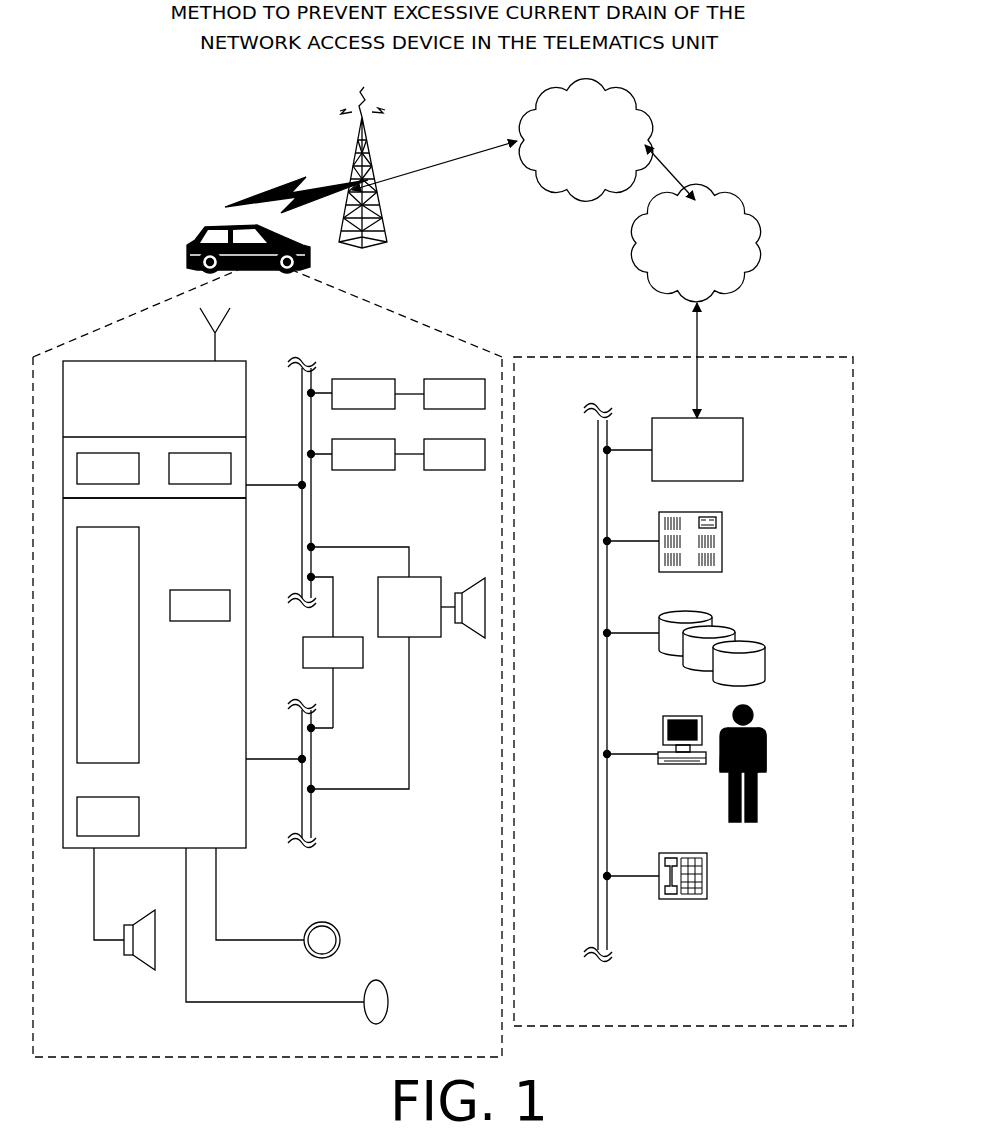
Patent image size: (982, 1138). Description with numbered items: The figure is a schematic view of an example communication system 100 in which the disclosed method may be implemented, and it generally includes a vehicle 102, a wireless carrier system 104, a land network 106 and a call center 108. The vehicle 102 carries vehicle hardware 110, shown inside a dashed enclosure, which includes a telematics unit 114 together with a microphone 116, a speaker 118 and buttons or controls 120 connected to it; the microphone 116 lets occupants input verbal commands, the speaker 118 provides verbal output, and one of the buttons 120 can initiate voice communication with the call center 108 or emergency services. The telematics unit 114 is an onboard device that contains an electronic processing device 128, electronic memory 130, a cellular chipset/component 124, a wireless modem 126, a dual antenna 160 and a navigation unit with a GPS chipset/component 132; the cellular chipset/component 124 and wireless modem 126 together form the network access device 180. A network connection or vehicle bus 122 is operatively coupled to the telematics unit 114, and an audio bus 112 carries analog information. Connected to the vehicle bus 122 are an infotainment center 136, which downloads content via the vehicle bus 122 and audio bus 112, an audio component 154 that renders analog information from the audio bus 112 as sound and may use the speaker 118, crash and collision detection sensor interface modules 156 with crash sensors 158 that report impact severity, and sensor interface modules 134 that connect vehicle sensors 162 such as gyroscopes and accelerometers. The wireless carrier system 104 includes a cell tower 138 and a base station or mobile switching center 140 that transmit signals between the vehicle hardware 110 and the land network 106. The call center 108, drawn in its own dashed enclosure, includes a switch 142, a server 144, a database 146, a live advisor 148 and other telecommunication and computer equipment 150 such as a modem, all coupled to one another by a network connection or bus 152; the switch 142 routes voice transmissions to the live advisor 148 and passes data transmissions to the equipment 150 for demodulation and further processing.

The communication system 100 is at (140, 87).
The vehicle 102 is at (197, 238).
The wireless carrier system 104 is at (482, 173).
The land network 106 is at (696, 243).
The call center 108 is at (698, 1028).
The vehicle hardware 110 is at (212, 1060).
The audio bus 112 is at (302, 810).
The telematics unit 114 is at (246, 645).
The microphone 116 is at (383, 980).
The speaker 118 is at (140, 963).
The buttons or controls 120 is at (318, 923).
The vehicle bus 122 is at (311, 530).
The cellular chipset/component 124 is at (108, 468).
The wireless modem 126 is at (200, 468).
The electronic processing device 128 is at (108, 645).
The electronic memory 130 is at (108, 816).
The GPS chipset/component 132 is at (200, 605).
The sensor interface modules 134 is at (363, 454).
The infotainment center 136 is at (333, 682).
The cell tower 138 is at (387, 135).
The mobile switching center 140 is at (585, 140).
The switch 142 is at (697, 449).
The server 144 is at (722, 535).
The database 146 is at (765, 650).
The live advisor 148 is at (755, 725).
The telecommunication and computer equipment 150 is at (707, 870).
The network connection or bus 152 is at (598, 682).
The audio component 154 is at (431, 607).
The crash and/or collision detection sensor interface module 156 is at (363, 394).
The crash sensors 158 is at (440, 394).
The dual antenna 160 is at (215, 353).
The vehicle sensors 162 is at (440, 454).
The network access device 180 is at (154, 498).